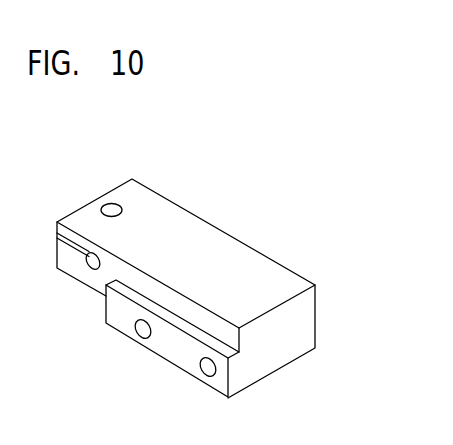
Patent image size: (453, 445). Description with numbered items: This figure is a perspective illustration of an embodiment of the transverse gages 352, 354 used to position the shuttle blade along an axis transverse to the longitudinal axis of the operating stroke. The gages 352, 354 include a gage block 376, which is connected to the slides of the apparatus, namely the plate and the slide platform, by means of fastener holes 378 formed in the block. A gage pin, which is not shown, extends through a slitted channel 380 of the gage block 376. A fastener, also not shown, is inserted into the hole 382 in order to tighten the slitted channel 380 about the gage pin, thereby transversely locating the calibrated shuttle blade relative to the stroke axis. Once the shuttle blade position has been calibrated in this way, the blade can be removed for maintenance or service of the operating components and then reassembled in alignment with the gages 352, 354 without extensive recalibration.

The transverse gage 352 is at (177, 224).
The transverse gage 354 is at (177, 224).
The gage block 376 is at (215, 242).
The fastener holes 378 is at (145, 326).
The slitted channel 380 is at (91, 270).
The hole 382 is at (111, 203).